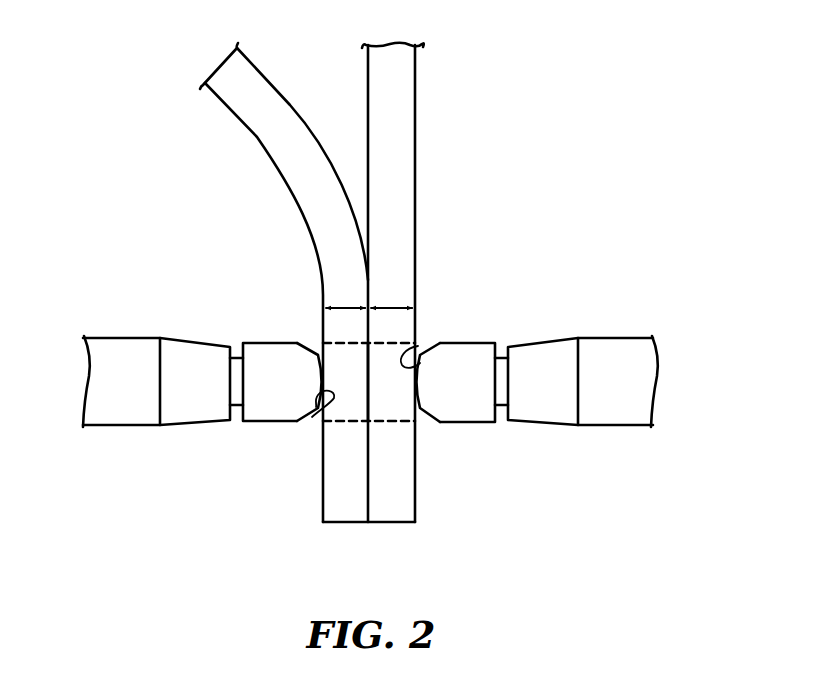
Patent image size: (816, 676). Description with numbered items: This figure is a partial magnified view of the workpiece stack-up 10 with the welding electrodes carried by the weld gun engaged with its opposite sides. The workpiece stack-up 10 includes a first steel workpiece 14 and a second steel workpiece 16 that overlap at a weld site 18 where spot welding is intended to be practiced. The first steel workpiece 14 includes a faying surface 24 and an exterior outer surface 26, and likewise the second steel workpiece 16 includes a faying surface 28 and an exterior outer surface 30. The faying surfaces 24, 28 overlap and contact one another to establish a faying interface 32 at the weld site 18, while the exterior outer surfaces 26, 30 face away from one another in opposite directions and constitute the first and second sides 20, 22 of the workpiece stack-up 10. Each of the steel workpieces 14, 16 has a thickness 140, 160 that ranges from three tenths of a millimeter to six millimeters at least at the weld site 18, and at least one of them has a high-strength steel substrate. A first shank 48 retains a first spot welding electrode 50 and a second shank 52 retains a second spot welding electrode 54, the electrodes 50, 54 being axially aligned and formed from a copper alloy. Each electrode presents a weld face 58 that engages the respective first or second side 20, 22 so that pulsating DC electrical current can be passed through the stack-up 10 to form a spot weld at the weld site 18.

The workpiece stack-up 10 is at (324, 283).
The first steel workpiece 14 is at (391, 282).
The second steel workpiece 16 is at (262, 273).
The weld site 18 is at (342, 426).
The first side 20 is at (420, 324).
The second side 22 is at (318, 328).
The faying surface 24 is at (366, 123).
The exterior outer surface 26 is at (417, 166).
The faying surface 28 is at (272, 82).
The exterior outer surface 30 is at (255, 135).
The faying interface 32 is at (370, 388).
The first shank 48 is at (500, 366).
The first spot welding electrode 50 is at (467, 428).
The second shank 52 is at (236, 366).
The second spot welding electrode 54 is at (258, 428).
The weld face 58 is at (418, 346).
The thickness 140 is at (393, 305).
The thickness 160 is at (343, 305).